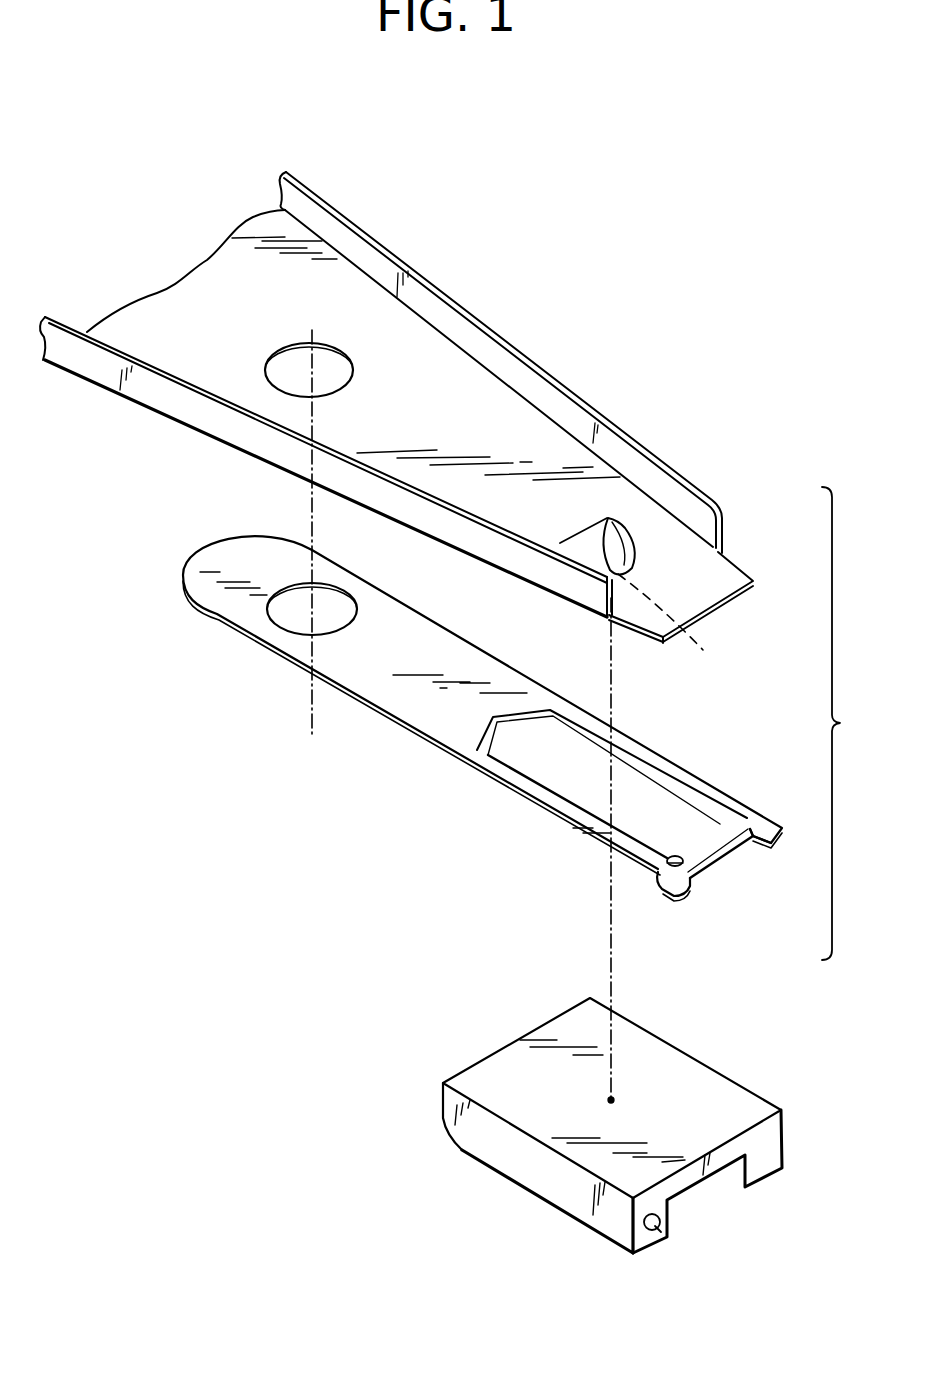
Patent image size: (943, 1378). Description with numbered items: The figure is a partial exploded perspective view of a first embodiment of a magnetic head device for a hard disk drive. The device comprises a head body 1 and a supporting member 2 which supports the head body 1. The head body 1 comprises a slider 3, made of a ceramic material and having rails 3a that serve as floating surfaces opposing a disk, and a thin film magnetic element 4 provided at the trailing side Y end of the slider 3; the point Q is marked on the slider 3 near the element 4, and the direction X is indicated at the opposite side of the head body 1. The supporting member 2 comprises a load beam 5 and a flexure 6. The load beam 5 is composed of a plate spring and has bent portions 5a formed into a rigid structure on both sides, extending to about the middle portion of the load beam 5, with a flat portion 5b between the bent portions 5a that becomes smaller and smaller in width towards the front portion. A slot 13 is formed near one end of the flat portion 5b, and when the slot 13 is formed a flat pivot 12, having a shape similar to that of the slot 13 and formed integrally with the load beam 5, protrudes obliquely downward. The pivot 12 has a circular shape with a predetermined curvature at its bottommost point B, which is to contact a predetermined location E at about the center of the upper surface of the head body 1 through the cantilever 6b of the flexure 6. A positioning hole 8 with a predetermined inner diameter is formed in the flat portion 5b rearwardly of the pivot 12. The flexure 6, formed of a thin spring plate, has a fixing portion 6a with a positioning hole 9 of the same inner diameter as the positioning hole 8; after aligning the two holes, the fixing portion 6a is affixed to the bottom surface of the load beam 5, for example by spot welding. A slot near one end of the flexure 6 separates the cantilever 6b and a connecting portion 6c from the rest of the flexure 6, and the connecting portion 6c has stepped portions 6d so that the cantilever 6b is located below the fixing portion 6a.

The head body 1 is at (636, 1156).
The supporting member 2 is at (848, 723).
The slider 3 is at (522, 1163).
The rails 3a is at (648, 1247).
The thin film magnetic element 4 is at (676, 1253).
The load beam 5 is at (420, 423).
The bent portions 5a is at (163, 400).
The flat portion 5b is at (192, 317).
The flexure 6 is at (470, 723).
The fixing portion 6a is at (415, 698).
The cantilever 6b is at (555, 778).
The connecting portion 6c is at (703, 847).
The stepped portions 6d is at (745, 838).
The positioning hole 8 is at (287, 362).
The positioning hole 9 is at (288, 608).
The pivot 12 is at (603, 537).
The slot 13 is at (640, 538).
The bottommost point B is at (675, 624).
The predetermined location E is at (614, 1098).
The head element position Q is at (657, 1227).
The direction X is at (485, 1052).
The trailing side Y is at (710, 1198).